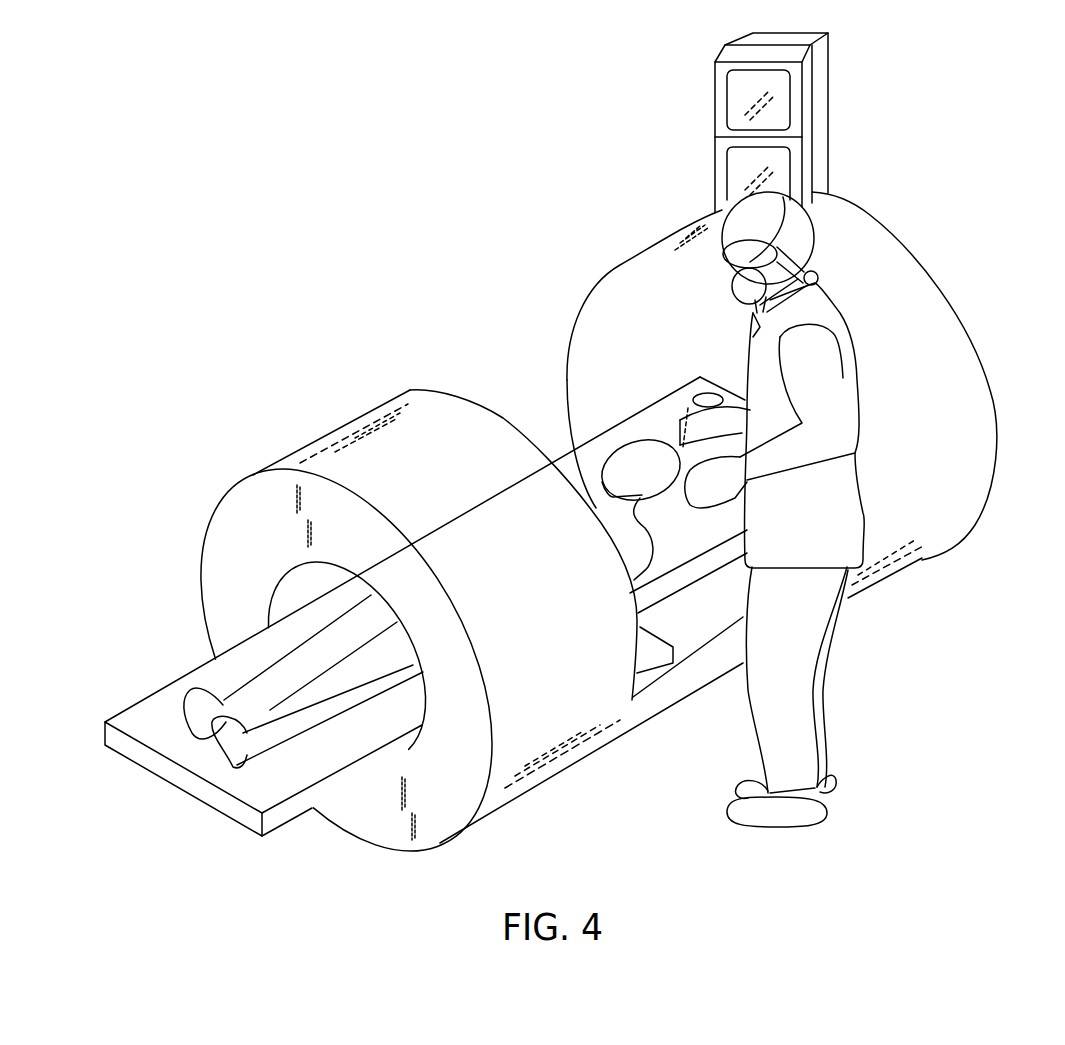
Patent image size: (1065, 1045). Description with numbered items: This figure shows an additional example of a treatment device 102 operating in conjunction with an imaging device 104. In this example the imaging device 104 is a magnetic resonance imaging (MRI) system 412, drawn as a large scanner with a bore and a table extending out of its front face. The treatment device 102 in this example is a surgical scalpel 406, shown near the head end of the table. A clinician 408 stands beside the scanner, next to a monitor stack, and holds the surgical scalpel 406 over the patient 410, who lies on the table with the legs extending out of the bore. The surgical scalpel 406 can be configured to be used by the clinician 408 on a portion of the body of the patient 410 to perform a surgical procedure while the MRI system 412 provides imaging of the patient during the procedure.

The imaging device 104 is at (599, 521).
The magnetic resonance imaging (MRI) system 412 is at (693, 247).
The treatment device 102 is at (591, 374).
The surgical scalpel 406 is at (687, 433).
The clinician 408 is at (820, 353).
The patient 410 is at (402, 560).